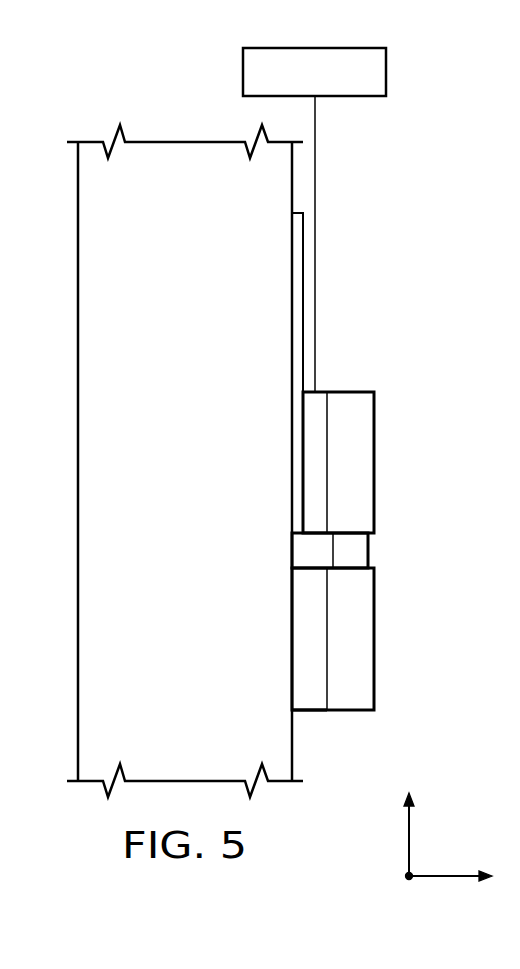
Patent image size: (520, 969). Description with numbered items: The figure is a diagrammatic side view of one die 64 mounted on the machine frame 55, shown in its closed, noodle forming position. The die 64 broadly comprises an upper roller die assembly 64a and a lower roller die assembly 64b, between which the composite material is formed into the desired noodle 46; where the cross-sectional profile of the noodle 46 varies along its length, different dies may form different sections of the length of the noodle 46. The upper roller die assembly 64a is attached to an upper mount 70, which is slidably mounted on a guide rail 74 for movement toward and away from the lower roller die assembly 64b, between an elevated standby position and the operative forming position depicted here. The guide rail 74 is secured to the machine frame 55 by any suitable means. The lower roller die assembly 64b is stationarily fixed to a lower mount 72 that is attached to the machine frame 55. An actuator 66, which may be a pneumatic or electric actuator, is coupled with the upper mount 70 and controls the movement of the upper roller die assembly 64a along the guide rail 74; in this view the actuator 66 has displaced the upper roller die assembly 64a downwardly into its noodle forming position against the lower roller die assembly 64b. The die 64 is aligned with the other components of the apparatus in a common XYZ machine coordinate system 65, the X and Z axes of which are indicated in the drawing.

The machine frame 55 is at (200, 478).
The actuator 66 is at (387, 72).
The guide rail 74 is at (297, 258).
The upper mount 70 is at (312, 436).
The upper roller die assembly 64a is at (363, 463).
The noodle 46 is at (368, 548).
The lower roller die assembly 64b is at (365, 640).
The lower mount 72 is at (312, 700).
The die 64 is at (475, 227).
The XYZ machine coordinate system 65 is at (472, 822).